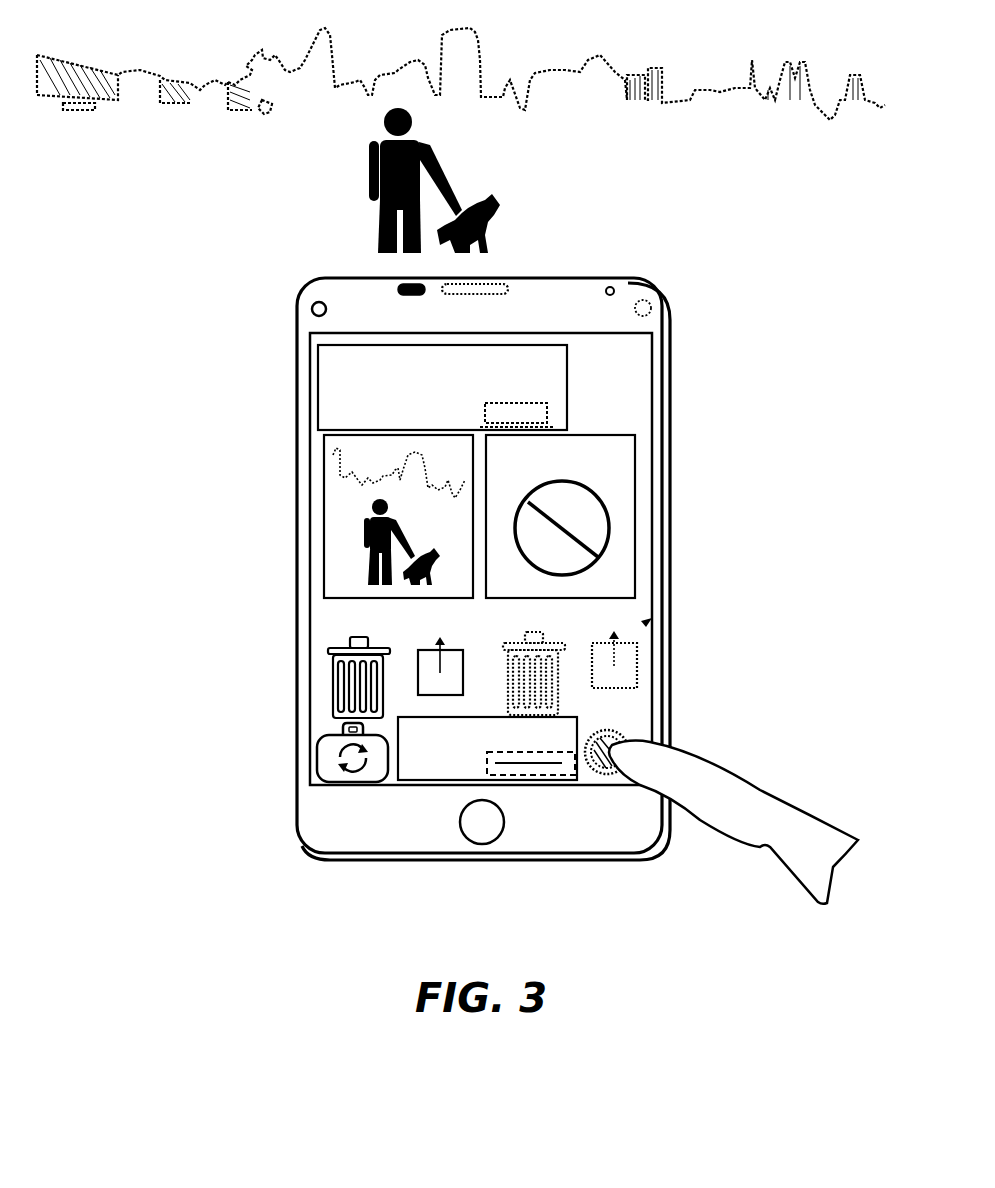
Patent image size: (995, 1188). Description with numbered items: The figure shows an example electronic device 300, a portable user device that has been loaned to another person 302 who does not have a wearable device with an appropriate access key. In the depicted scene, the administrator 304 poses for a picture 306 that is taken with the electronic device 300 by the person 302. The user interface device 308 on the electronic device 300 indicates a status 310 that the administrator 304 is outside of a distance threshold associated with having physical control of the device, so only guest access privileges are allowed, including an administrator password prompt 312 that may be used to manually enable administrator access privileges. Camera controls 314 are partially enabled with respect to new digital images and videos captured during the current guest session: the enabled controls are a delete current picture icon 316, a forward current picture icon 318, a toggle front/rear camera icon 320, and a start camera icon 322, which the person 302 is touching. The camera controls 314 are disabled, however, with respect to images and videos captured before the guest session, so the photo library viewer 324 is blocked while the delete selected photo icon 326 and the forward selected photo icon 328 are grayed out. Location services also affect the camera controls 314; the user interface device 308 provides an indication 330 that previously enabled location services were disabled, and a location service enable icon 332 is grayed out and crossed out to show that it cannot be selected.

The electronic device 300 is at (297, 475).
The person 302 is at (772, 867).
The administrator 304 is at (378, 243).
The picture 306 is at (324, 516).
The user interface device 308 is at (607, 333).
The status 310 is at (317, 388).
The administrator password prompt 312 is at (557, 418).
The camera controls 314 is at (648, 625).
The delete current picture icon 316 is at (340, 686).
The forward current picture icon 318 is at (418, 652).
The toggle front/rear camera icon 320 is at (317, 757).
The start camera icon 322 is at (593, 775).
The photo library viewer 324 is at (635, 550).
The delete selected photo icon 326 is at (560, 715).
The forward selected photo icon 328 is at (637, 680).
The indication 330 is at (423, 780).
The location service enable icon 332 is at (523, 780).